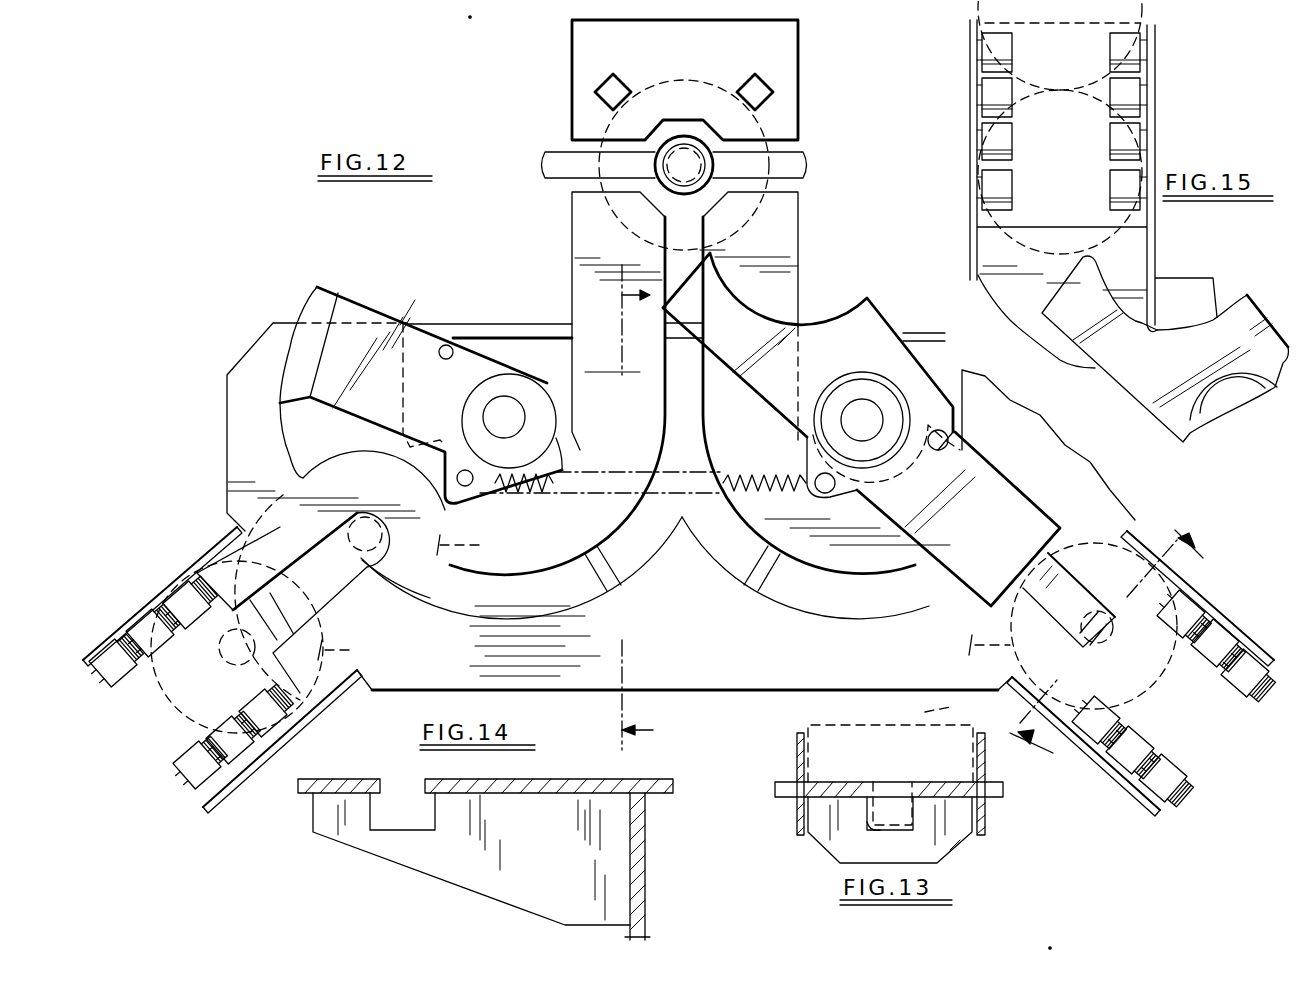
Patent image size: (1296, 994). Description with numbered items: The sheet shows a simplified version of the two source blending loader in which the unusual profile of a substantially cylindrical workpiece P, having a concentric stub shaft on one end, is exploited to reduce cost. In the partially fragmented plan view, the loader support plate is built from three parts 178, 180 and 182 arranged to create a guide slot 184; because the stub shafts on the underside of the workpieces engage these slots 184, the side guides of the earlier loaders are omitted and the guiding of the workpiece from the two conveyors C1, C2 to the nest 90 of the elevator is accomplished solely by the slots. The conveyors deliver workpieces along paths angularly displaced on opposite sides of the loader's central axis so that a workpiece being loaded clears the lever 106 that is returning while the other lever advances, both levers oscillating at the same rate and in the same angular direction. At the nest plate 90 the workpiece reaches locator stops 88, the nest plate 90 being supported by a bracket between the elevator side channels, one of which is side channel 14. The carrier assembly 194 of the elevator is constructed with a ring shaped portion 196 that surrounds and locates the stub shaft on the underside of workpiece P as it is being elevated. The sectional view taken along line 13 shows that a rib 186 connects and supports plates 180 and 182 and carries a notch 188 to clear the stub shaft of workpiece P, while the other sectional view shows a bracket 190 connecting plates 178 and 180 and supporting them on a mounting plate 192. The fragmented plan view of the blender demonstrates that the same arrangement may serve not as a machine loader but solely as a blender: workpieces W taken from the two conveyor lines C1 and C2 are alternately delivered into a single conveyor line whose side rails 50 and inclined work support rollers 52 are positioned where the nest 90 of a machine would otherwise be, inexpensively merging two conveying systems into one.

In FIG. 12, the locator stops 88 is at (757, 80).
In FIG. 12, the nest plate 90 is at (790, 108).
In FIG. 12, the carrier assembly 194 is at (812, 168).
In FIG. 12, the ring shaped portion 196 is at (678, 137).
In FIG. 12, the mounting plate 192 is at (523, 330).
In FIG. 14, the mounting plate 192 is at (648, 883).
In FIG. 12, the side channel 14 is at (638, 507).
In FIG. 12, the guide slot 184 is at (702, 399).
In FIG. 12, the bracket 190 is at (597, 568).
In FIG. 14, the bracket 190 is at (495, 890).
In FIG. 12, the support plate part 180 is at (530, 630).
In FIG. 14, the support plate part 180 is at (365, 772).
In FIG. 13, the support plate part 180 is at (795, 783).
In FIG. 12, the support plate part 178 is at (455, 565).
In FIG. 14, the support plate part 178 is at (586, 790).
In FIG. 12, the support plate part 182 is at (813, 560).
In FIG. 13, the support plate part 182 is at (1003, 790).
In FIG. 12, the rib 186 is at (1095, 645).
In FIG. 13, the rib 186 is at (950, 840).
In FIG. 13, the notch 188 is at (862, 835).
In FIG. 12, the section line 13— 13 is at (1118, 646).
In FIG. 15, the side rails 50 is at (1153, 120).
In FIG. 15, the work support rollers 52 is at (1110, 146).
In FIG. 15, the lever 106 is at (1247, 300).
In FIG. 15, the workpieces W is at (970, 242).
In FIG. 12, the workpiece P is at (664, 597).
In FIG. 13, the workpiece P is at (946, 704).
In FIG. 12, the conveyor C1 is at (1230, 618).
In FIG. 12, the conveyor C2 is at (312, 712).